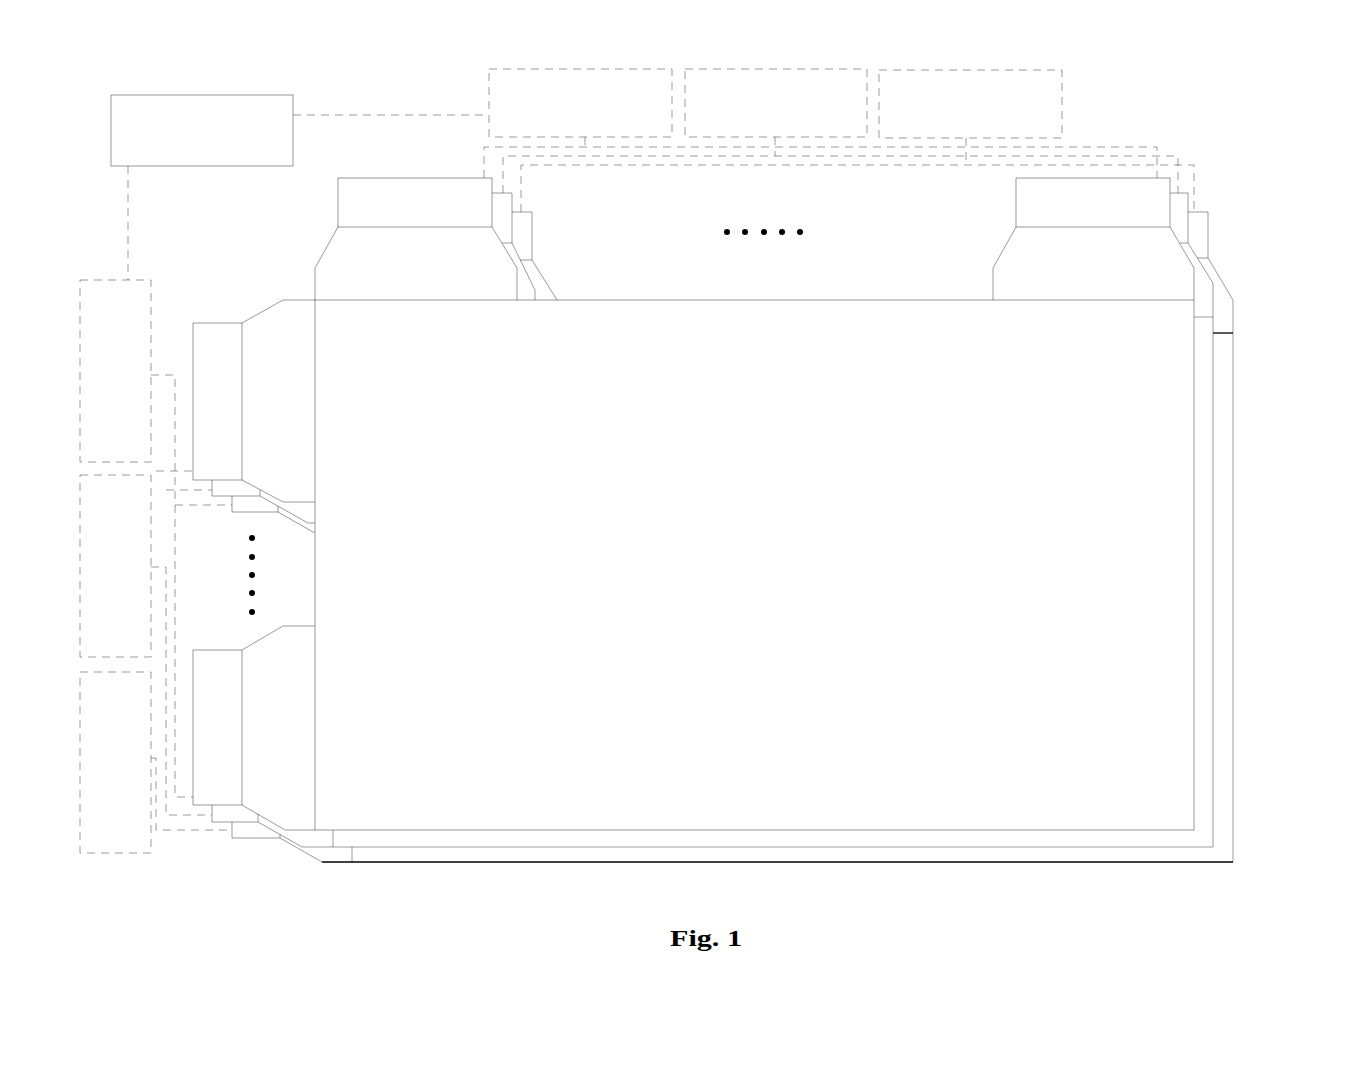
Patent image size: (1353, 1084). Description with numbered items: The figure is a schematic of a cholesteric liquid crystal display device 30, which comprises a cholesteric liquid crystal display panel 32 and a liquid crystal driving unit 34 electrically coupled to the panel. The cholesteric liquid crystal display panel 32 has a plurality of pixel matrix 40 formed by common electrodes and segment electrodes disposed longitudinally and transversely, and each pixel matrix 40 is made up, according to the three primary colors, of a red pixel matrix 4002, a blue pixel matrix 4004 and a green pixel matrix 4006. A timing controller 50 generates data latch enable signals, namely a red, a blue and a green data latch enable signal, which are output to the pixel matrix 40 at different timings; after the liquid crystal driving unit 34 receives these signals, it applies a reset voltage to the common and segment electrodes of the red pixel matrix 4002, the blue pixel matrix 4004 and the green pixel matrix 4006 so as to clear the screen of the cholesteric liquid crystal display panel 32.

The cholesteric liquid crystal display device 30 is at (1153, 120).
The cholesteric liquid crystal display panel 32 is at (750, 573).
The liquid crystal driving unit 34 is at (1255, 210).
The pixel matrix 40 is at (812, 572).
The timing controller 50 is at (267, 155).
The red pixel matrix 4002 is at (1138, 647).
The blue pixel matrix 4004 is at (1083, 385).
The green pixel matrix 4006 is at (1202, 503).